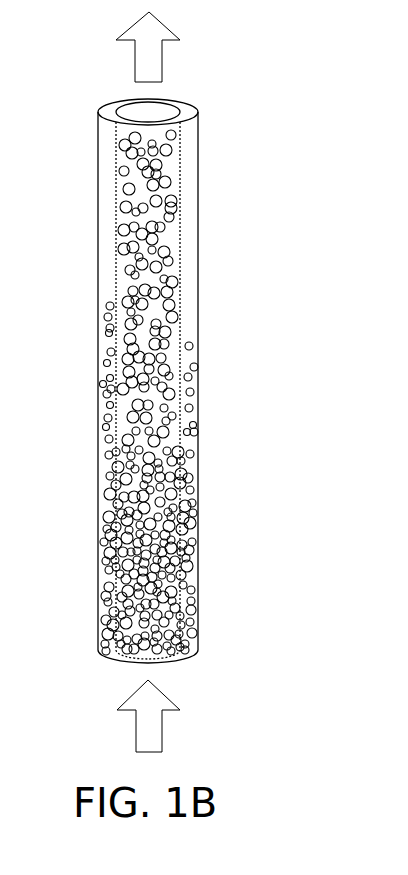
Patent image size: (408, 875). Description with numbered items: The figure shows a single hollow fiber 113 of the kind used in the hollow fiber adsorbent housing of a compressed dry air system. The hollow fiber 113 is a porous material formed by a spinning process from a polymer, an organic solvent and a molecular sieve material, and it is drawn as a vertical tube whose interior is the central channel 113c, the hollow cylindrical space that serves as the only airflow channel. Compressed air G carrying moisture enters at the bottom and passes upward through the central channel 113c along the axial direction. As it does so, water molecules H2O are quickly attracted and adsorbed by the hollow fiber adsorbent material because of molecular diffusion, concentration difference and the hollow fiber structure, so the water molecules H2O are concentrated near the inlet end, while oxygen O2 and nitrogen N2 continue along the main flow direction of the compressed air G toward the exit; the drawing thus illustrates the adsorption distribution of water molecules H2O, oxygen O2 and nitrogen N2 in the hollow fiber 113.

The hollow fiber 113 is at (98, 302).
The central channel 113c is at (169, 109).
The nitrogen N2 is at (172, 209).
The oxygen O2 is at (172, 282).
The water molecules H2O is at (197, 597).
The compressed air G is at (151, 716).